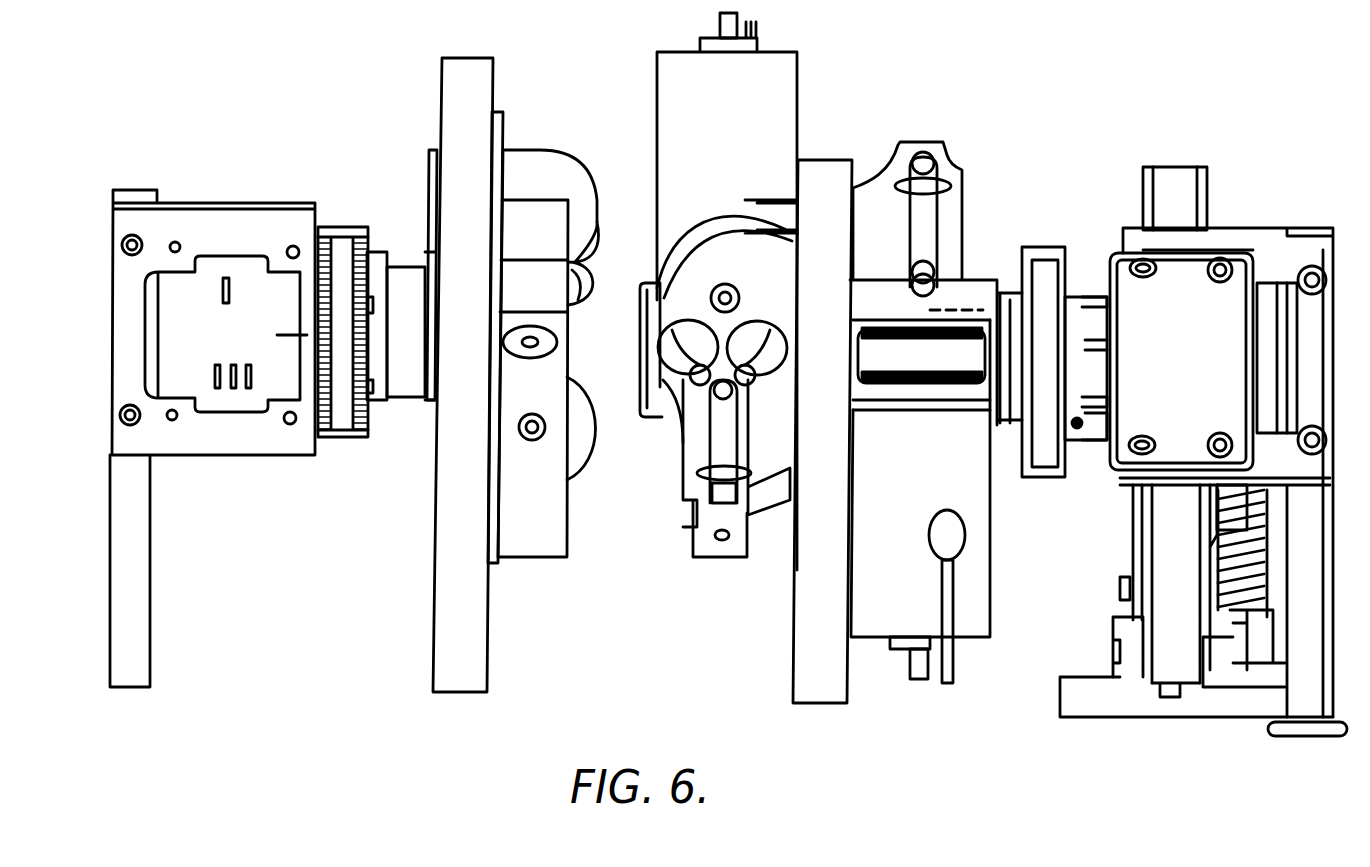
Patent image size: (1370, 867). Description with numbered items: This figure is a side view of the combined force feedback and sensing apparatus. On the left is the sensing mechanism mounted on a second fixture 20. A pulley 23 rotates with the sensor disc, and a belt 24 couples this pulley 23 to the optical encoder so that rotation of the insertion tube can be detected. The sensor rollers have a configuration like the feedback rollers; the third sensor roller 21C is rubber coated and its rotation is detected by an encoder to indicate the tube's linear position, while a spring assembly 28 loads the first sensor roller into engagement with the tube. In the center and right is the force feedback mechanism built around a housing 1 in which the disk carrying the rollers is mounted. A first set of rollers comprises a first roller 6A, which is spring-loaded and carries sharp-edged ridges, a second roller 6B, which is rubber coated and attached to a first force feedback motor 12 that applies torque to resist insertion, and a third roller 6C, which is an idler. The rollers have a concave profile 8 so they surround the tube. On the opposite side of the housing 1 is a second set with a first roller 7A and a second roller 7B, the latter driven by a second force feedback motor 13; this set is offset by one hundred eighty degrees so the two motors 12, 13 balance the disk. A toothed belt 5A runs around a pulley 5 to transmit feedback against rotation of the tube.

The housing 1 is at (823, 187).
The pulley 5 is at (1070, 267).
The toothed belt 5A is at (1043, 277).
The first roller 6A is at (675, 443).
The second roller 6B is at (665, 407).
The third roller 6C is at (700, 220).
The first roller 7A is at (955, 330).
The second roller 7B is at (962, 310).
The concave profile 8 is at (925, 330).
The first force feedback motor 12 is at (763, 103).
The second force feedback motor 13 is at (888, 617).
The second fixture 20 is at (470, 83).
The third sensor roller 21C is at (598, 217).
The pulley 23 is at (367, 425).
The belt 24 is at (342, 247).
The spring assembly 28 is at (533, 167).